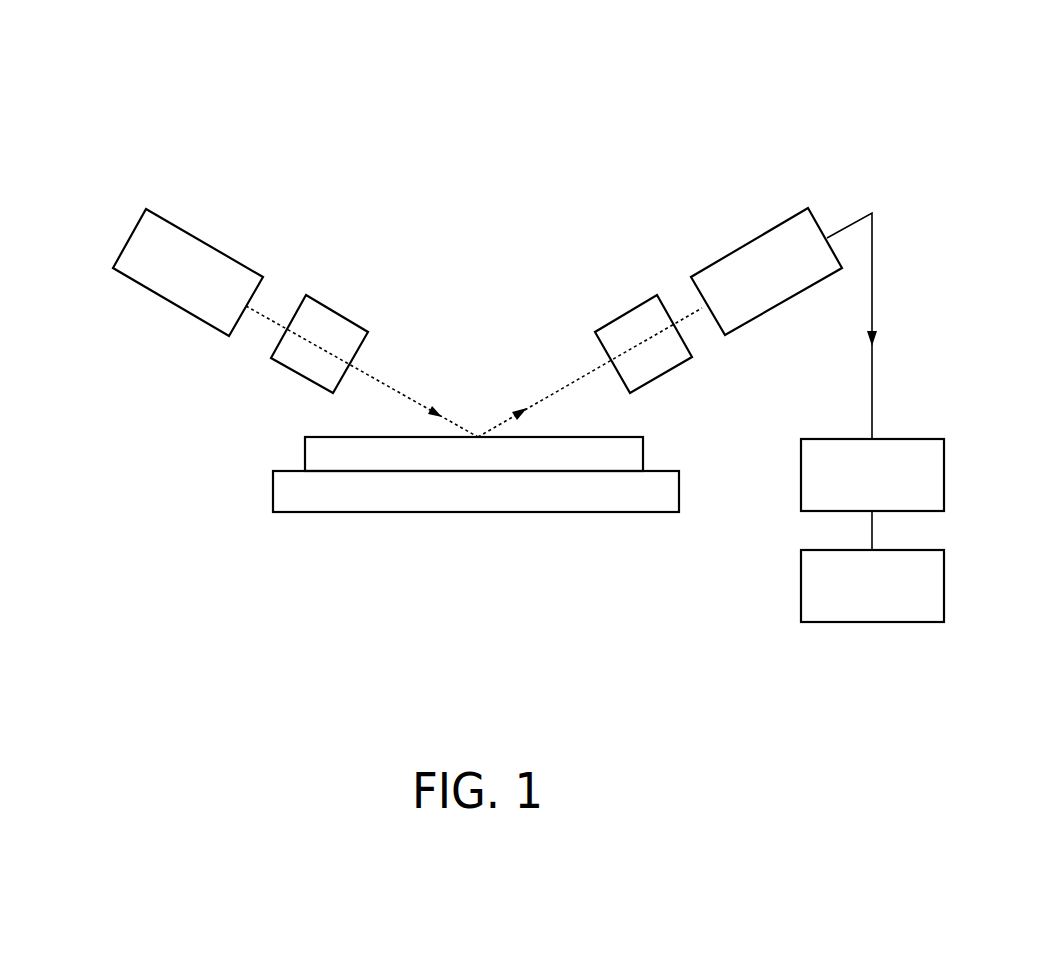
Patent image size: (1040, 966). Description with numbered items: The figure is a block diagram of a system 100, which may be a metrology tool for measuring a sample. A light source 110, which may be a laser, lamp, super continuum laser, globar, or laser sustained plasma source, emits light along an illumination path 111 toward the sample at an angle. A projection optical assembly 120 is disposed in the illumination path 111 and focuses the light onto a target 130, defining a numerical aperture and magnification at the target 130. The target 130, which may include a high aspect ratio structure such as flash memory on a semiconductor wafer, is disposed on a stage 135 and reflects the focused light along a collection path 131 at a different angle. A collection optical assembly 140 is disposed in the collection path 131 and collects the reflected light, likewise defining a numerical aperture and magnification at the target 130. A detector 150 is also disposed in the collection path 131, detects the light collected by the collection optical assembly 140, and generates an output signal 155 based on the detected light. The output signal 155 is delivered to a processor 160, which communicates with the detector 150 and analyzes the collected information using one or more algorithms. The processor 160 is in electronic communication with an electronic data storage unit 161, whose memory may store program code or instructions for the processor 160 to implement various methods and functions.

The system 100 is at (128, 62).
The light source 110 is at (188, 235).
The illumination path 111 is at (385, 385).
The projection optical assembly 120 is at (350, 320).
The target 130 is at (615, 437).
The collection path 131 is at (573, 378).
The stage 135 is at (477, 512).
The collection optical assembly 140 is at (623, 315).
The detector 150 is at (767, 232).
The output signal 155 is at (873, 293).
The processor 160 is at (872, 475).
The electronic data storage unit 161 is at (872, 566).